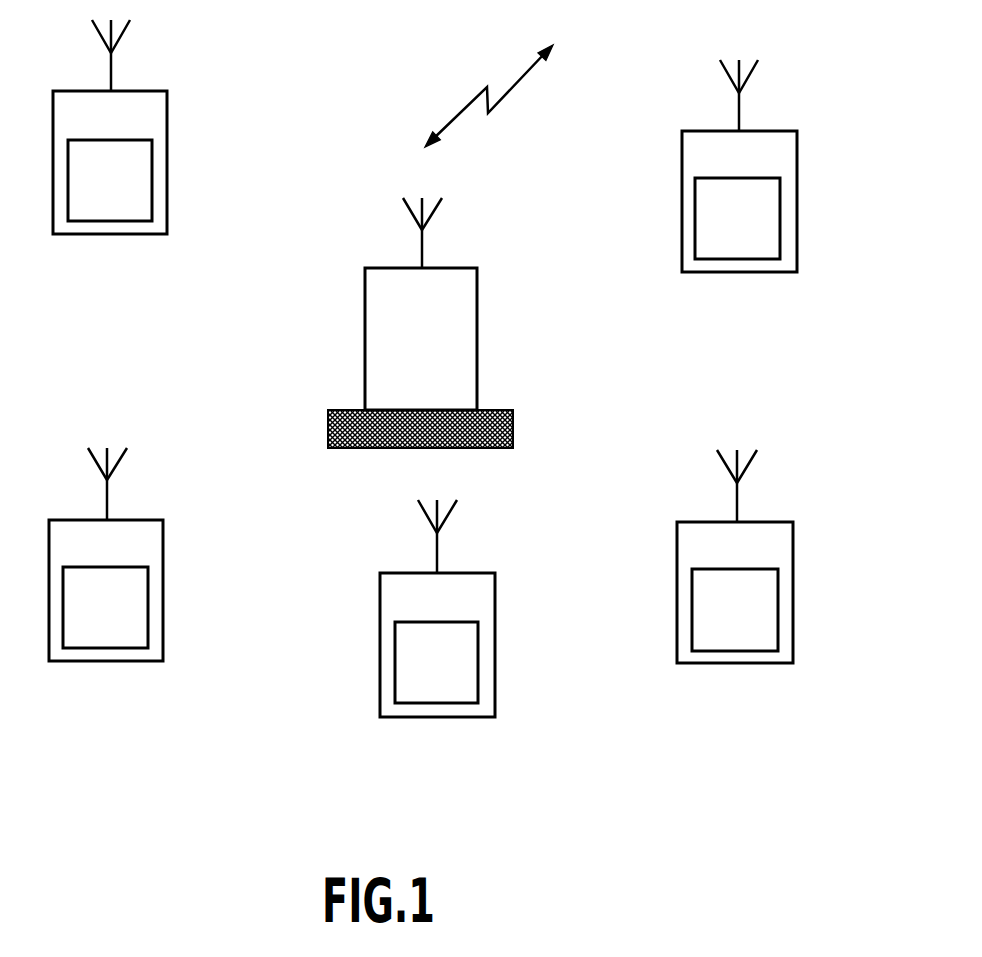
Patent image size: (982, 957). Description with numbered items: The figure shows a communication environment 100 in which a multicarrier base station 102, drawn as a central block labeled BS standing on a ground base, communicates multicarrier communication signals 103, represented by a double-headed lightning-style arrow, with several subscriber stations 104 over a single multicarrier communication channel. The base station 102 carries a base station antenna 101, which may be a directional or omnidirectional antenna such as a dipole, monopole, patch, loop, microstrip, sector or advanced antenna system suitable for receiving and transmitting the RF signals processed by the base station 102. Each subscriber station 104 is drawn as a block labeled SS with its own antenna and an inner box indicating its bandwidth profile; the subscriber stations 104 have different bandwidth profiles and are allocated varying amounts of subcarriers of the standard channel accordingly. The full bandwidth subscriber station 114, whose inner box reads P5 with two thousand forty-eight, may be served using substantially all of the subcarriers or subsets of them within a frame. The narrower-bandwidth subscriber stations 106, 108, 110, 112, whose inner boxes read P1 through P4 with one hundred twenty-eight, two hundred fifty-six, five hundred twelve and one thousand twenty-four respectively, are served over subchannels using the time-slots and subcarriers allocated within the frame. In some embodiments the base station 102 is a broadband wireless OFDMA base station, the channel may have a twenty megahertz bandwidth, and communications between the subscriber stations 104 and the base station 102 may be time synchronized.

The wireless communication system 100 is at (464, 429).
The base station antenna 101 is at (475, 233).
The multicarrier base station 102 is at (447, 358).
The multicarrier communication signals 103 is at (523, 95).
The subscriber station 104 is at (467, 368).
The narrower-bandwidth subscriber station 106 is at (790, 214).
The narrower-bandwidth subscriber station 108 is at (786, 606).
The narrower-bandwidth subscriber station 110 is at (489, 659).
The narrower-bandwidth subscriber station 112 is at (157, 604).
The full bandwidth subscriber station 114 is at (163, 171).